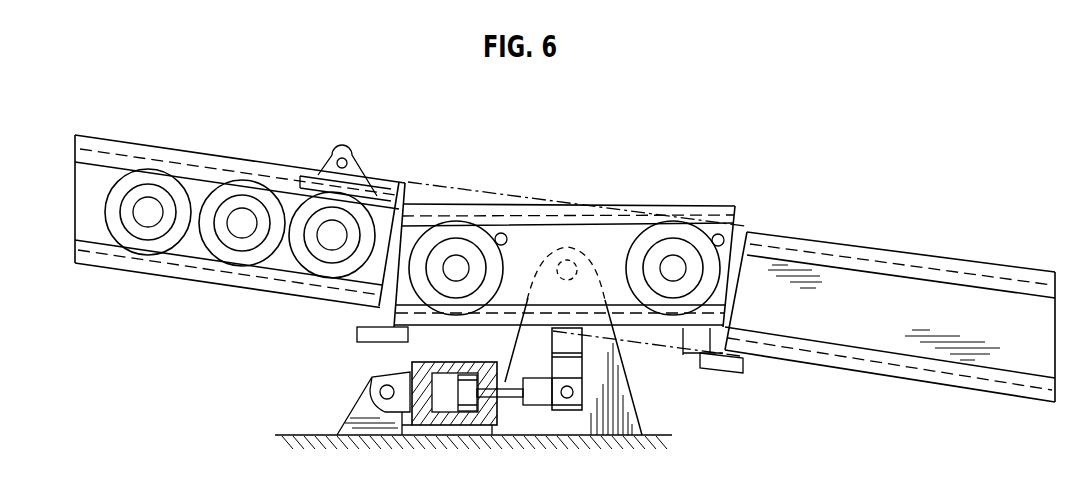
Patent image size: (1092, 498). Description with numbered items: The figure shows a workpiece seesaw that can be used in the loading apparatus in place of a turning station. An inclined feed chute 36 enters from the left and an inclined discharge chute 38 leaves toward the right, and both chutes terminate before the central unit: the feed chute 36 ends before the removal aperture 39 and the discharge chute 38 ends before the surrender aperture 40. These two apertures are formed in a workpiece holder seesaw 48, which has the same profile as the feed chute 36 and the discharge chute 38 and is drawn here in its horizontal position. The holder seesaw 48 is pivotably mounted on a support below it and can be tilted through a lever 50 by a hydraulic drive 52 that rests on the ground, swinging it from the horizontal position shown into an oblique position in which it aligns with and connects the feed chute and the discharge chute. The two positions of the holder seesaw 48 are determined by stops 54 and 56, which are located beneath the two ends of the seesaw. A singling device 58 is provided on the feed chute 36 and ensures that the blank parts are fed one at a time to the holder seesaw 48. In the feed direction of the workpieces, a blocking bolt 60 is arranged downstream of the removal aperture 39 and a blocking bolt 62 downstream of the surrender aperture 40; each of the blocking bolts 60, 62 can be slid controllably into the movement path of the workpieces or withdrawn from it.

The feed chute 36 is at (205, 157).
The discharge chute 38 is at (888, 285).
The removal aperture 39 is at (452, 221).
The surrender aperture 40 is at (683, 221).
The workpiece holder seesaw 48 is at (616, 238).
The lever 50 is at (575, 370).
The hydraulic drive 52 is at (467, 404).
The stop 54 is at (367, 338).
The stop 56 is at (729, 361).
The singling device 58 is at (355, 158).
The blocking bolt 60 is at (502, 233).
The blocking bolt 62 is at (726, 228).